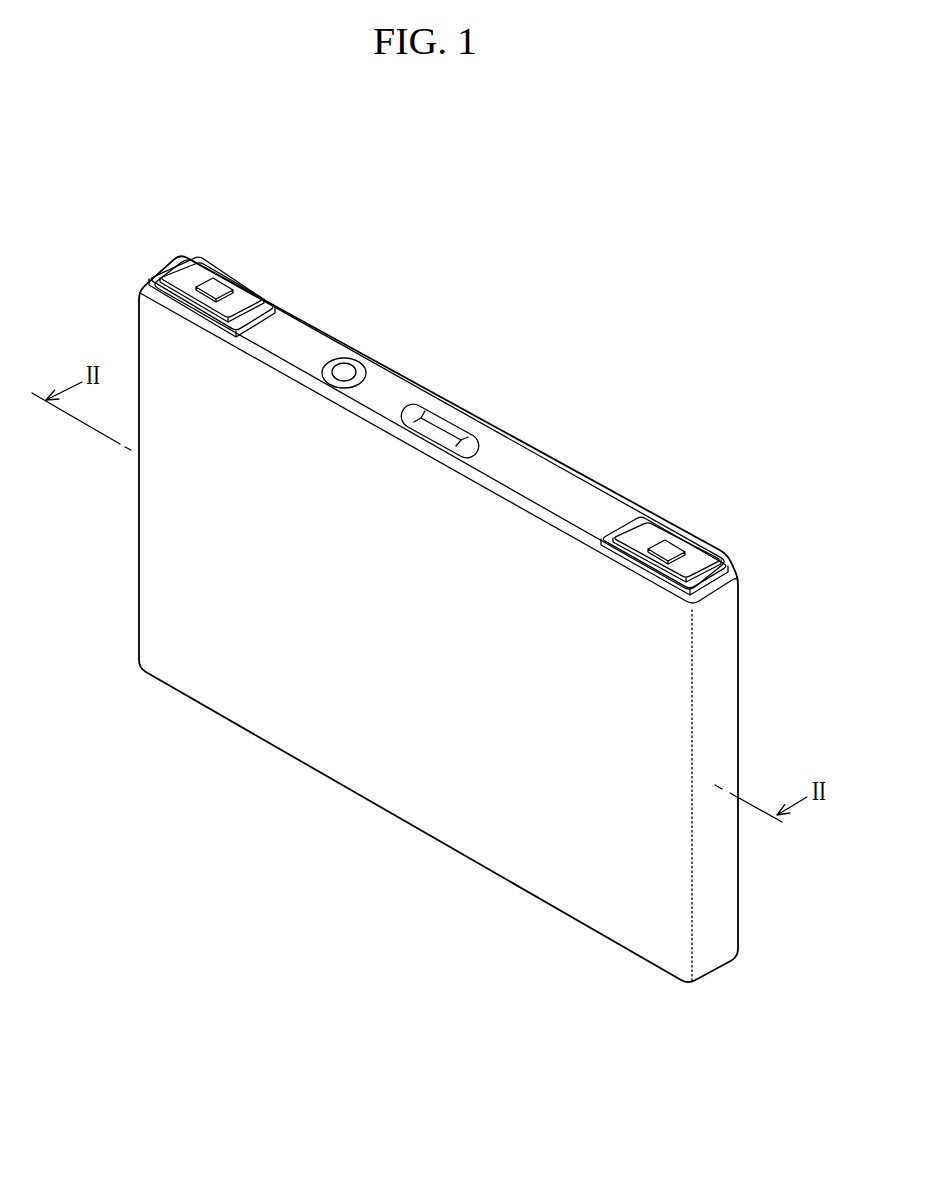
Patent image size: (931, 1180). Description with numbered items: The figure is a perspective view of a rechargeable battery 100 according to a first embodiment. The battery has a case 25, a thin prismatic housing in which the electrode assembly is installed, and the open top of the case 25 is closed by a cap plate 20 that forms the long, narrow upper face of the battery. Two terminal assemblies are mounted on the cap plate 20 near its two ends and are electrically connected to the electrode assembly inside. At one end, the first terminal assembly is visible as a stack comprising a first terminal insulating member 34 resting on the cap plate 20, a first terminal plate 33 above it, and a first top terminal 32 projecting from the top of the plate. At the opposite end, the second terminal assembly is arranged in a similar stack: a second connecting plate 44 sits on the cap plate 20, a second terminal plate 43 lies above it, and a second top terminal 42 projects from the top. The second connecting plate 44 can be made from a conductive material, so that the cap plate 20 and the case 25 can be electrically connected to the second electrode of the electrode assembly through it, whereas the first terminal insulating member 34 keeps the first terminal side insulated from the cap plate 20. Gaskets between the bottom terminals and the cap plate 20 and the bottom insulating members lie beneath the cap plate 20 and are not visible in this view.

The rechargeable battery 100 is at (490, 194).
The cap plate 20 is at (536, 470).
The case 25 is at (393, 782).
The first top terminal 32 is at (211, 279).
The first terminal plate 33 is at (236, 294).
The first terminal insulating member 34 is at (266, 304).
The second top terminal 42 is at (659, 539).
The second terminal plate 43 is at (690, 551).
The second connecting plate 44 is at (721, 564).